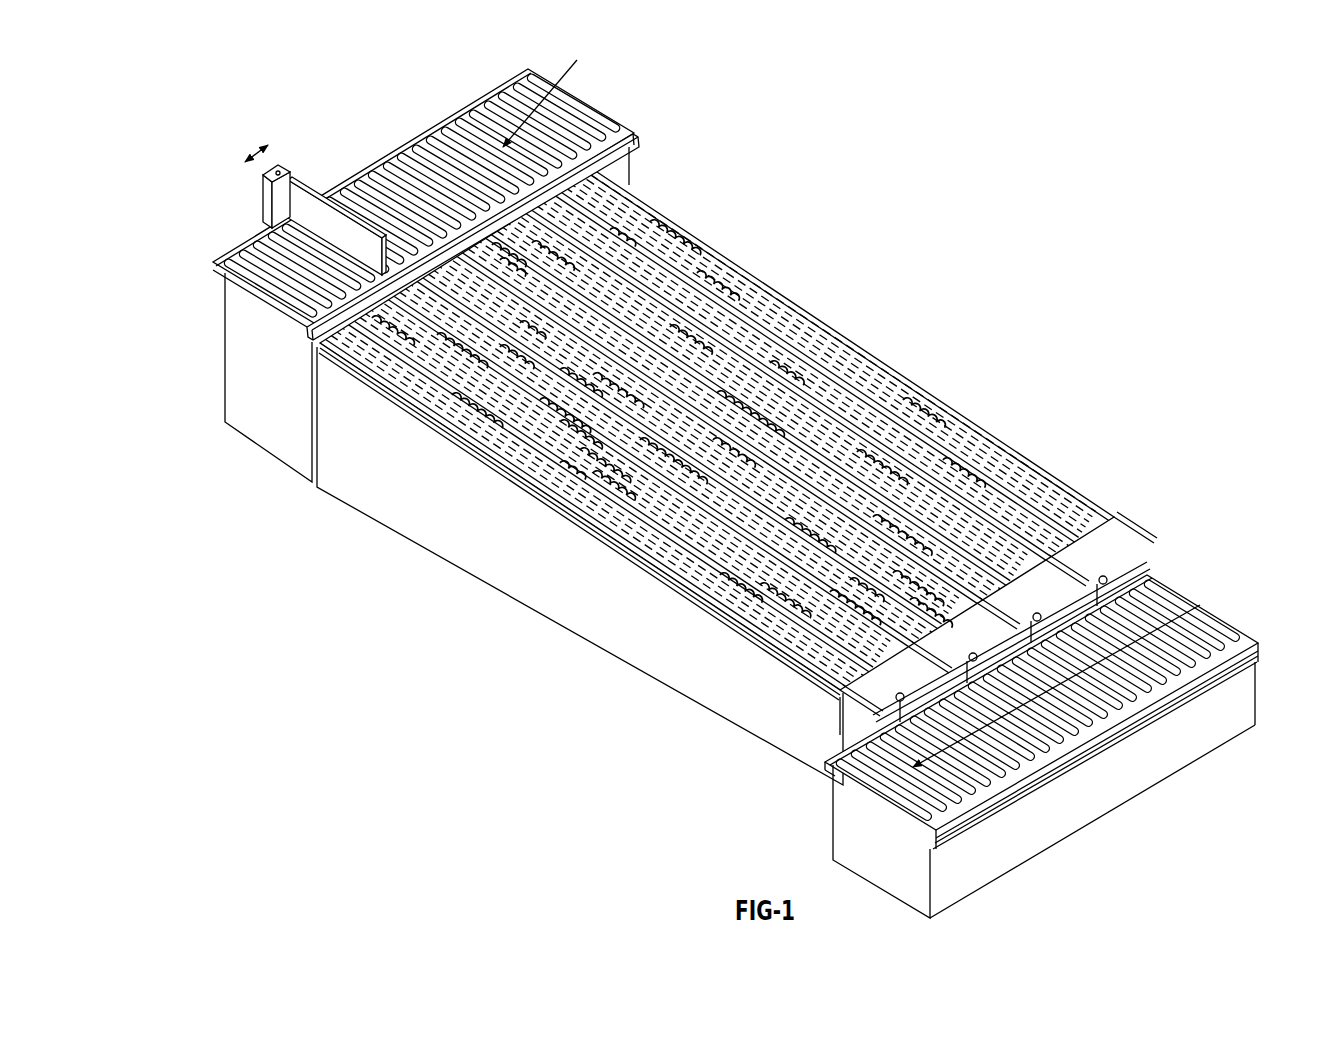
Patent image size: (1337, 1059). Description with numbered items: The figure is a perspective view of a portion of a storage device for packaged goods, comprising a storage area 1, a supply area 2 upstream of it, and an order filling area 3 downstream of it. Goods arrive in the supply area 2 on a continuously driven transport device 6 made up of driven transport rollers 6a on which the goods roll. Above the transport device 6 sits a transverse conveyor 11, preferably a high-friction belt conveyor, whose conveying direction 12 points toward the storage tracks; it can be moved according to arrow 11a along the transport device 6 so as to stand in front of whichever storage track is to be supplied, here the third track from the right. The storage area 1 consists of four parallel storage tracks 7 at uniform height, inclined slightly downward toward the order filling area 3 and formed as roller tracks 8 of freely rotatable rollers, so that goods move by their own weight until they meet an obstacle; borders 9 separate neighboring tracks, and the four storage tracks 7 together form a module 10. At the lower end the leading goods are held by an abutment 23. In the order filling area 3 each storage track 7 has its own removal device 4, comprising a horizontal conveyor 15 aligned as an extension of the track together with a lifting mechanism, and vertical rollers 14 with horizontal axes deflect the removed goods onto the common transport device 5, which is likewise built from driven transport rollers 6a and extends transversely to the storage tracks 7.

The storage area 1 is at (722, 433).
The supply area 2 is at (660, 140).
The order filling area 3 is at (1193, 575).
The removal device 4 is at (971, 583).
The transport device 5 is at (1128, 712).
The transport device 6 is at (420, 130).
The transport rollers 6a is at (580, 108).
The storage tracks 7 is at (857, 348).
The roller tracks 8 is at (722, 320).
The borders 9 is at (722, 433).
The module 10 is at (485, 547).
The transverse conveyor 11 is at (315, 197).
The arrow 11a is at (247, 145).
The conveying direction 12 is at (360, 205).
The vertical rollers 14 is at (900, 713).
The horizontal conveyor 15 is at (1065, 600).
The abutment 23 is at (1113, 543).